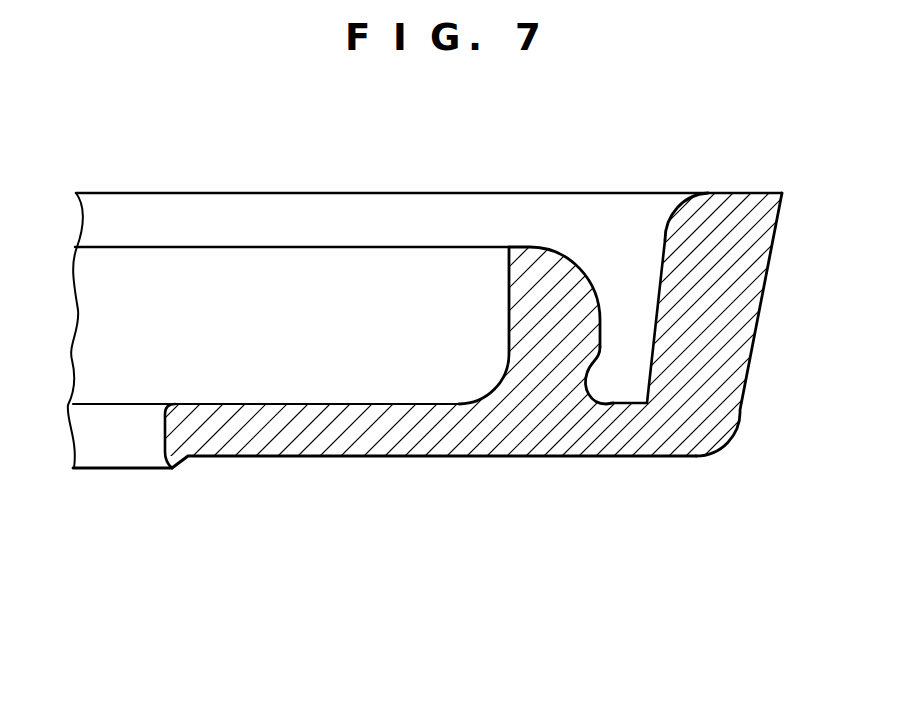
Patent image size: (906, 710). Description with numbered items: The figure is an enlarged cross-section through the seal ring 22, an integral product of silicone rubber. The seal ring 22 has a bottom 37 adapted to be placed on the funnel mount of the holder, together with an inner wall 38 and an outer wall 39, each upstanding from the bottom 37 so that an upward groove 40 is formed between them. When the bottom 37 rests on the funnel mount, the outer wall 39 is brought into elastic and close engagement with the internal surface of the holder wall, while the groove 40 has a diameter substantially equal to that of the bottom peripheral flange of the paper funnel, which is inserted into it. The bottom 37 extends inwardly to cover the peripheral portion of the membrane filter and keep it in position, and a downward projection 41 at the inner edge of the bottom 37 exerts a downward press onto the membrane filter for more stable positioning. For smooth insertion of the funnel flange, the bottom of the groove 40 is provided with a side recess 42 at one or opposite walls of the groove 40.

The seal ring 22 is at (505, 485).
The bottom 37 is at (337, 433).
The inner wall 38 is at (535, 312).
The outer wall 39 is at (733, 279).
The groove 40 is at (627, 362).
The downward projection 41 is at (172, 470).
The side recess 42 is at (593, 377).